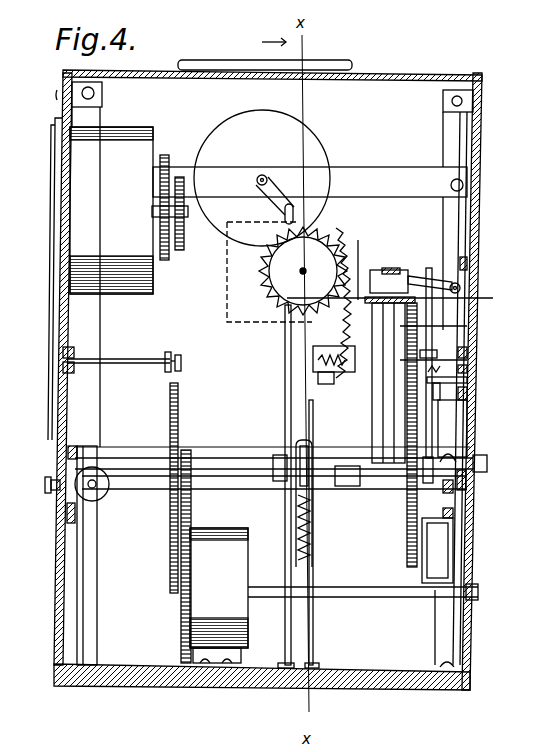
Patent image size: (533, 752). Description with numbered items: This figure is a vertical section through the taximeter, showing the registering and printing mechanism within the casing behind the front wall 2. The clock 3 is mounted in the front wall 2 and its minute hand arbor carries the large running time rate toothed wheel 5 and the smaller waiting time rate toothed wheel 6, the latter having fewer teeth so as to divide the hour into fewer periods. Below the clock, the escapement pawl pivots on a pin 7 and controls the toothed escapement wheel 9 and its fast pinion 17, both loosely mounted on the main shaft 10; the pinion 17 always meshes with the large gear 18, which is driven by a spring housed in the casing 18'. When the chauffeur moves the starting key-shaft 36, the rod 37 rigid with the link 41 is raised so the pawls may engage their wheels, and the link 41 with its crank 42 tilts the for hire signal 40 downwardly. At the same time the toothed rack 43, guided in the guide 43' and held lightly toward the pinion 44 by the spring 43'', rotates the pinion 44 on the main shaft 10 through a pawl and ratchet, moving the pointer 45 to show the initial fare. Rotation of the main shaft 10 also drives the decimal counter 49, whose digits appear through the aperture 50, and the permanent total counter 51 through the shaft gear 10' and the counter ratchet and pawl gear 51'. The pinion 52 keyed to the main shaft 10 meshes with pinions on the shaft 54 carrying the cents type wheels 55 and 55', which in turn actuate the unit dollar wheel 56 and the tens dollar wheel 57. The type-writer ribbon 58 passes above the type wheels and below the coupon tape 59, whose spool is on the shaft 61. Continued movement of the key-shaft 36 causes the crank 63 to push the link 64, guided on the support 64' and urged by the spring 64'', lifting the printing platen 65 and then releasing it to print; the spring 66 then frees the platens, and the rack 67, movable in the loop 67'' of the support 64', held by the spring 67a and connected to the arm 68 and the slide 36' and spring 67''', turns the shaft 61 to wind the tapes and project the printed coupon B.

The front wall 2 is at (59, 379).
The clock 3 is at (111, 210).
The running time rate toothed wheel 5 is at (169, 160).
The waiting time rate toothed wheel 6 is at (185, 194).
The pin 7 is at (143, 372).
The toothed escapement wheel 9 is at (178, 416).
The main shaft 10 is at (320, 534).
The bearing 10' is at (478, 484).
The pinion 17 is at (192, 508).
The large gear 18 is at (219, 587).
The casing 18' is at (217, 573).
The starting key-shaft 36 is at (272, 439).
The slide 36' is at (302, 492).
The rod 37 is at (225, 466).
The for hire signal 40 is at (320, 66).
The link 41 is at (285, 322).
The crank 42 is at (278, 197).
The toothed rack 43 is at (275, 423).
The guide 43' is at (336, 641).
The spring 43'' is at (336, 550).
The pinion 44 is at (296, 518).
The pointer 45 is at (48, 488).
The decimal counter 49 is at (100, 476).
The peephole or aperture 50 is at (66, 470).
The Veeder counter 51 is at (437, 550).
The counter ratchet and pawl gear 51' is at (478, 518).
The pinion 52 is at (406, 536).
The shaft 54 is at (467, 394).
The cents recording or type wheel 55 is at (462, 348).
The cents recording or type wheel 55' is at (468, 366).
The unit dollar wheel 56 is at (467, 327).
The tens dollar wheel 57 is at (372, 354).
The type-writer ribbon 58 is at (368, 303).
The coupon tape 59 is at (303, 271).
The shaft 61 is at (300, 273).
The arm or crank 63 is at (456, 460).
The vertically movable link 64 is at (466, 375).
The support 64' is at (464, 352).
The spring 64'' is at (480, 381).
The printing platen 65 is at (398, 276).
The spring 66 is at (449, 270).
The rack 67 is at (389, 264).
The loop 67'' is at (295, 358).
The spring 67''' is at (283, 364).
The spring 67a is at (318, 374).
The arm 68 is at (350, 486).
The printed coupon B is at (482, 297).